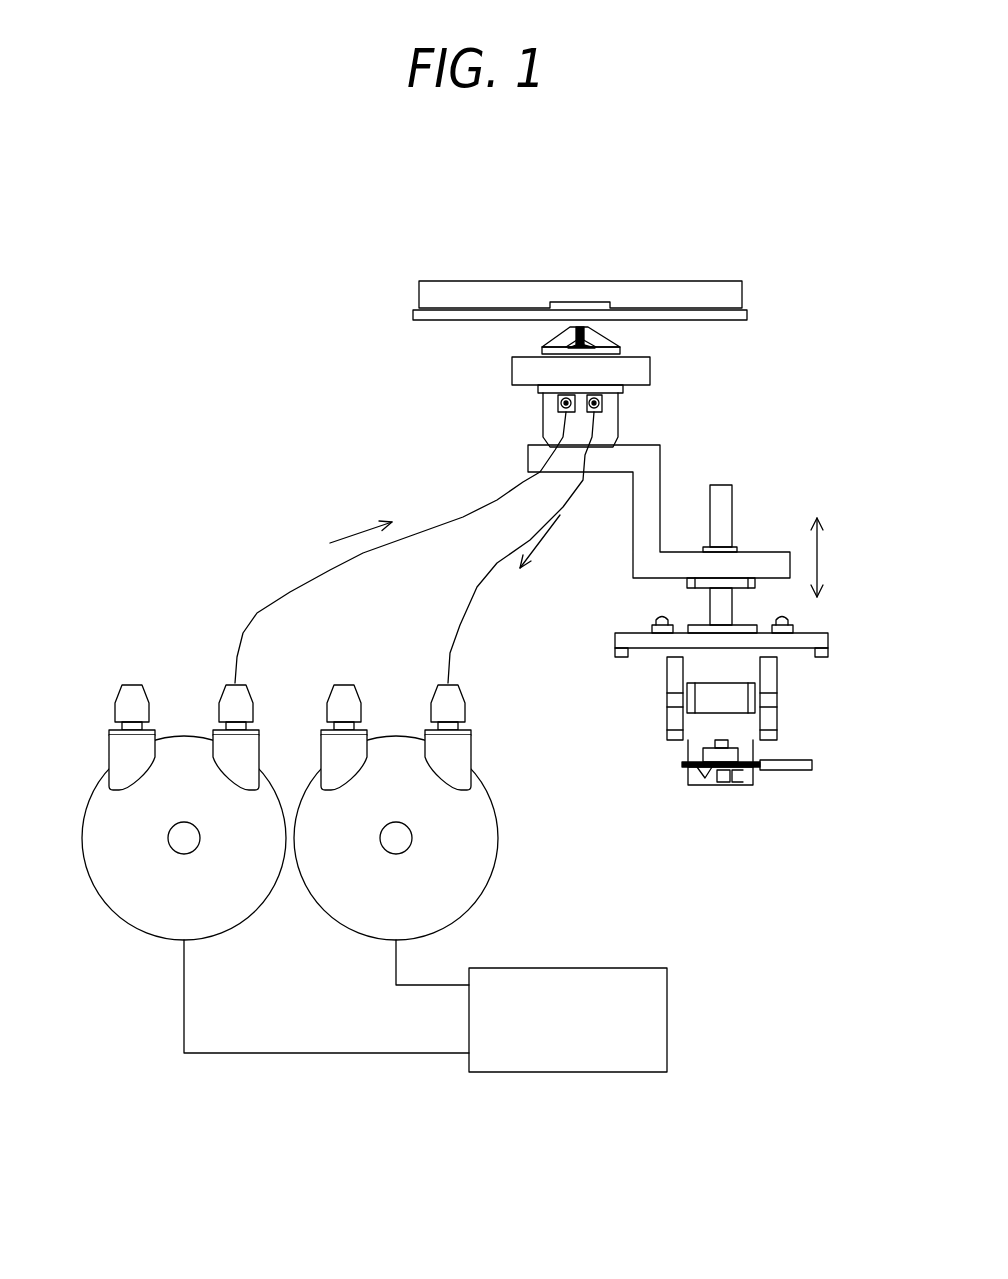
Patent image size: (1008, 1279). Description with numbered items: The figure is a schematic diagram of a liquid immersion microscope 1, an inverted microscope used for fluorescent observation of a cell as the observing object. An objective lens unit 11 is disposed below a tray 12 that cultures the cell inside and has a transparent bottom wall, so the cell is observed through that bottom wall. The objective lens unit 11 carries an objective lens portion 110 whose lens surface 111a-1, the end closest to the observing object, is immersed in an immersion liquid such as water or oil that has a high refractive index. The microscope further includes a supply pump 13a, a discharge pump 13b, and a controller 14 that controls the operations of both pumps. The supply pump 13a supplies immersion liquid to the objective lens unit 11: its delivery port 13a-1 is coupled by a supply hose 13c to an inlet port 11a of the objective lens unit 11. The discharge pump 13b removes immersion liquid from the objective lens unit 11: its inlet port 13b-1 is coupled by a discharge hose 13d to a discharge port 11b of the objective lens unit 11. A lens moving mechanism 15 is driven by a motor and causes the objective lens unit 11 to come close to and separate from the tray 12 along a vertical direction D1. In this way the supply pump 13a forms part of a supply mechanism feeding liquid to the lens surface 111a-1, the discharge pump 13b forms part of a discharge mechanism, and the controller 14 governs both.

The liquid immersion microscope 1 is at (488, 145).
The tray 12 is at (733, 280).
The objective lens portion 110 is at (540, 287).
The lens surface 111a-1 is at (582, 325).
The objective lens unit 11 is at (604, 400).
The inlet port 11a is at (556, 403).
The discharge port 11b is at (604, 403).
The supply hose 13c is at (288, 592).
The discharge hose 13d is at (458, 625).
The lens moving mechanism 15 is at (797, 700).
The vertical direction D1 is at (825, 556).
The supply pump 13a is at (253, 837).
The delivery port 13a-1 is at (220, 700).
The discharge pump 13b is at (426, 830).
The inlet port 13b-1 is at (466, 690).
The controller 14 is at (668, 1014).